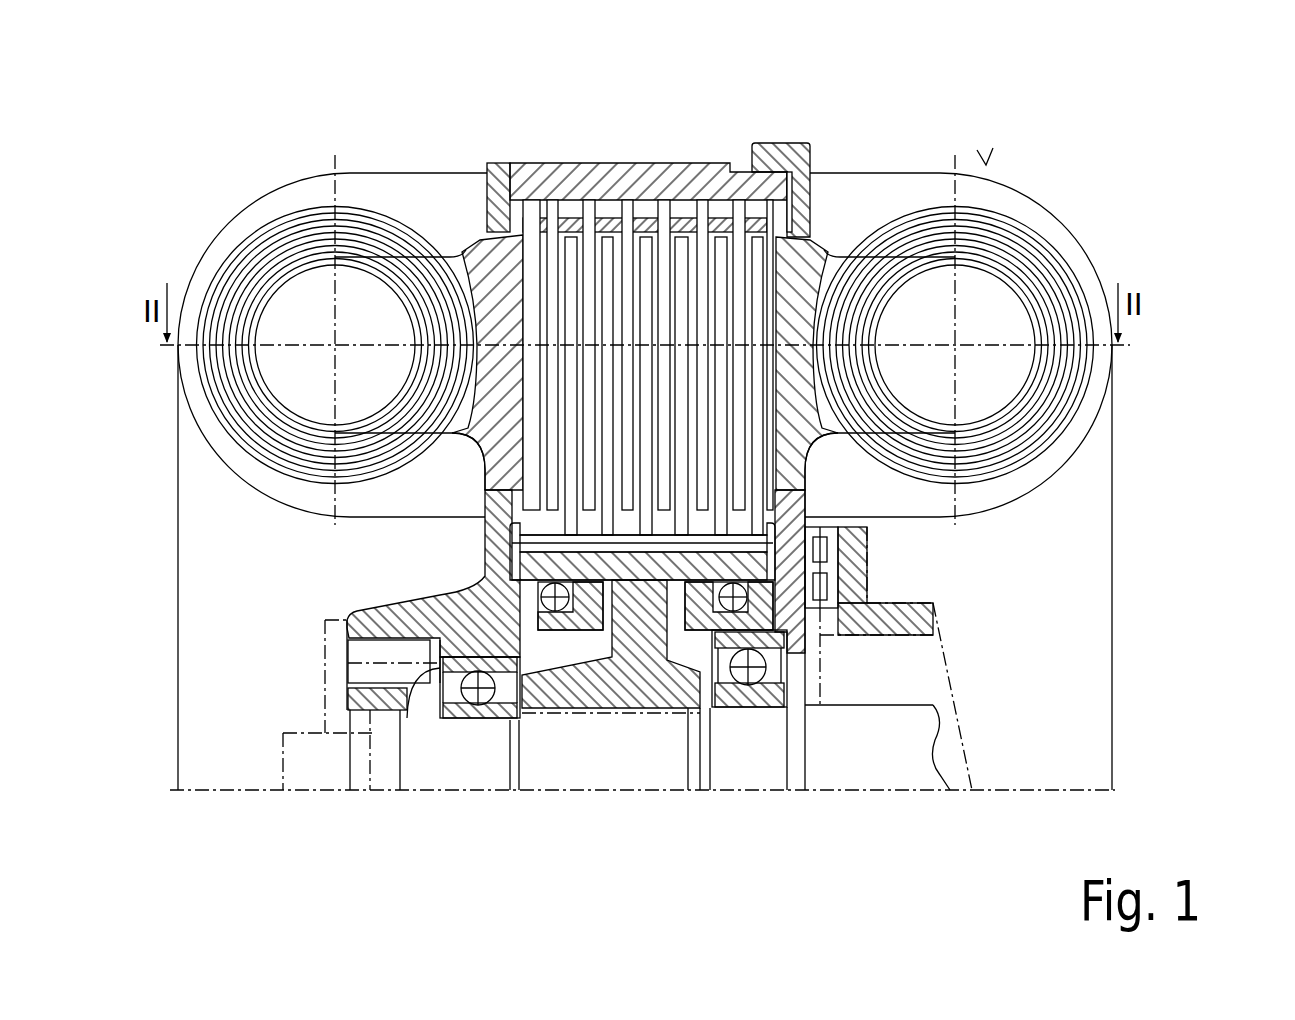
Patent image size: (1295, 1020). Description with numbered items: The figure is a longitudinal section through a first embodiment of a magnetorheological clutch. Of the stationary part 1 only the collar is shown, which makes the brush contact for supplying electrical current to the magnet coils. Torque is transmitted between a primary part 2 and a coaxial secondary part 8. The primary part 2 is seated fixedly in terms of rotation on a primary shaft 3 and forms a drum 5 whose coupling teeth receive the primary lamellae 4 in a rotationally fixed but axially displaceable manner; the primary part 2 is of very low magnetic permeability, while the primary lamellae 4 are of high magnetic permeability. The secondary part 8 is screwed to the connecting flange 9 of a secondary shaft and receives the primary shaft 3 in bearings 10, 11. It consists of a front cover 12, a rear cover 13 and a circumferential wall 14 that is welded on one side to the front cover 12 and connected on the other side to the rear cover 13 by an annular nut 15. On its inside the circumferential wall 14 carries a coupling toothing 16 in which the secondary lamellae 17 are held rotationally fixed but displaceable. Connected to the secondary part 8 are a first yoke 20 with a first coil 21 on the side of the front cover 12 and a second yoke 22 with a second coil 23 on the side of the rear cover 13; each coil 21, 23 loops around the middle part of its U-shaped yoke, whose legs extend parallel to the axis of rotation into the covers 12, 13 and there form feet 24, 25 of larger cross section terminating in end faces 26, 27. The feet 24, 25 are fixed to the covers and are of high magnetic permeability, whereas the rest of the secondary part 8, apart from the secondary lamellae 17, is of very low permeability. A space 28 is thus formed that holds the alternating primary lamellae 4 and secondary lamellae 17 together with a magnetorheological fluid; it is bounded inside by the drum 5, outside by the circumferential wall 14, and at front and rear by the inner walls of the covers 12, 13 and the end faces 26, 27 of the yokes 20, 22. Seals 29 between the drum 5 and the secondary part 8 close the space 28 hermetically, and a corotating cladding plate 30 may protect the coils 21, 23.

The stationary part 1 is at (853, 622).
The primary part 2 is at (710, 717).
The primary shaft 3 is at (925, 740).
The primary lamellae 4 is at (535, 271).
The drum 5 is at (625, 543).
The secondary part 8 is at (435, 610).
The connecting flange 9 is at (325, 730).
The bearing 10 is at (465, 690).
The bearing 11 is at (765, 668).
The front cover 12 is at (495, 185).
The rear cover 13 is at (792, 508).
The circumferential wall 14 is at (665, 225).
The annular nut 15 is at (790, 155).
The coupling toothing 16 is at (637, 172).
The secondary lamellae 17 is at (690, 240).
The first yoke 20 is at (316, 322).
The first coil 21 is at (248, 258).
The second yoke 22 is at (990, 310).
The second coil 23 is at (1003, 218).
The foot 24 is at (497, 293).
The foot 25 is at (803, 277).
The end face 26 is at (603, 202).
The end face 27 is at (770, 287).
The space 28 is at (665, 394).
The seals 29 is at (555, 590).
The cladding plate 30 is at (986, 165).